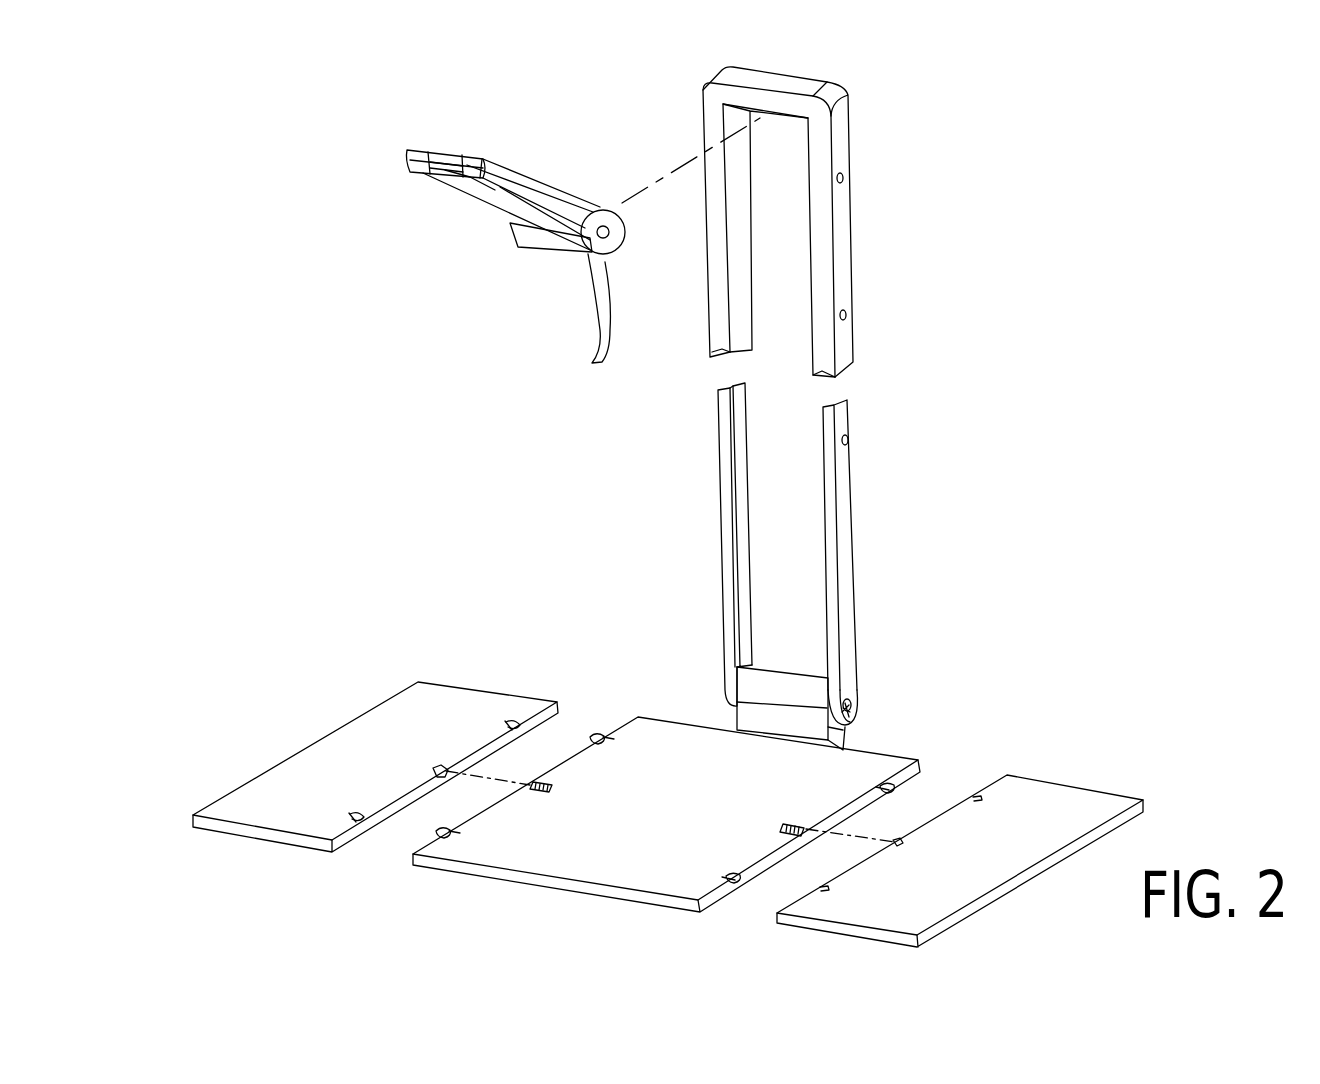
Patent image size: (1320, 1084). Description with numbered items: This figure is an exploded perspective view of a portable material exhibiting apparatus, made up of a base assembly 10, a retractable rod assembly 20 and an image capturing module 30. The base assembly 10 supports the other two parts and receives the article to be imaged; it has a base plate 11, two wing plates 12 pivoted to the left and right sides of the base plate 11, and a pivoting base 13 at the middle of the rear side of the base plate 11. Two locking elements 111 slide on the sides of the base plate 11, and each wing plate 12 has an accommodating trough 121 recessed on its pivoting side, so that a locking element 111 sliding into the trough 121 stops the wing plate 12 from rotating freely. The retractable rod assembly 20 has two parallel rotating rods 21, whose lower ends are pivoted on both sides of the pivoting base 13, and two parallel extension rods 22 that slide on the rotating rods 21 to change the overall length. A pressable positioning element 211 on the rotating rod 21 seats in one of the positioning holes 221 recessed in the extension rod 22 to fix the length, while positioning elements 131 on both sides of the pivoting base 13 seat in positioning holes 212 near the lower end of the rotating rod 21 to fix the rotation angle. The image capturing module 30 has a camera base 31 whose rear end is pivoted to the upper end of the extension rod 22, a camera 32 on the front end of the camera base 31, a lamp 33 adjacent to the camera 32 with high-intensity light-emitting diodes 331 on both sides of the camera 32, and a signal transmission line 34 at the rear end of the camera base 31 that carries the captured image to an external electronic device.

The base assembly 10 is at (240, 850).
The base plate 11 is at (640, 878).
The locking element 111 is at (800, 836).
The wing plate 12 is at (305, 820).
The accommodating trough 121 is at (440, 778).
The pivoting base 13 is at (740, 688).
The positioning element 131 is at (858, 719).
The retractable rod assembly 20 is at (824, 388).
The rotating rod 21 is at (848, 547).
The positioning element 211 is at (849, 441).
The positioning hole 212 is at (855, 706).
The extension rod 22 is at (843, 118).
The positioning hole 221 is at (846, 315).
The image capturing module 30 is at (488, 206).
The camera base 31 is at (598, 212).
The camera 32 is at (437, 160).
The lamp 33 is at (405, 162).
The light-emitting diode 331 is at (425, 180).
The signal transmission line 34 is at (585, 275).